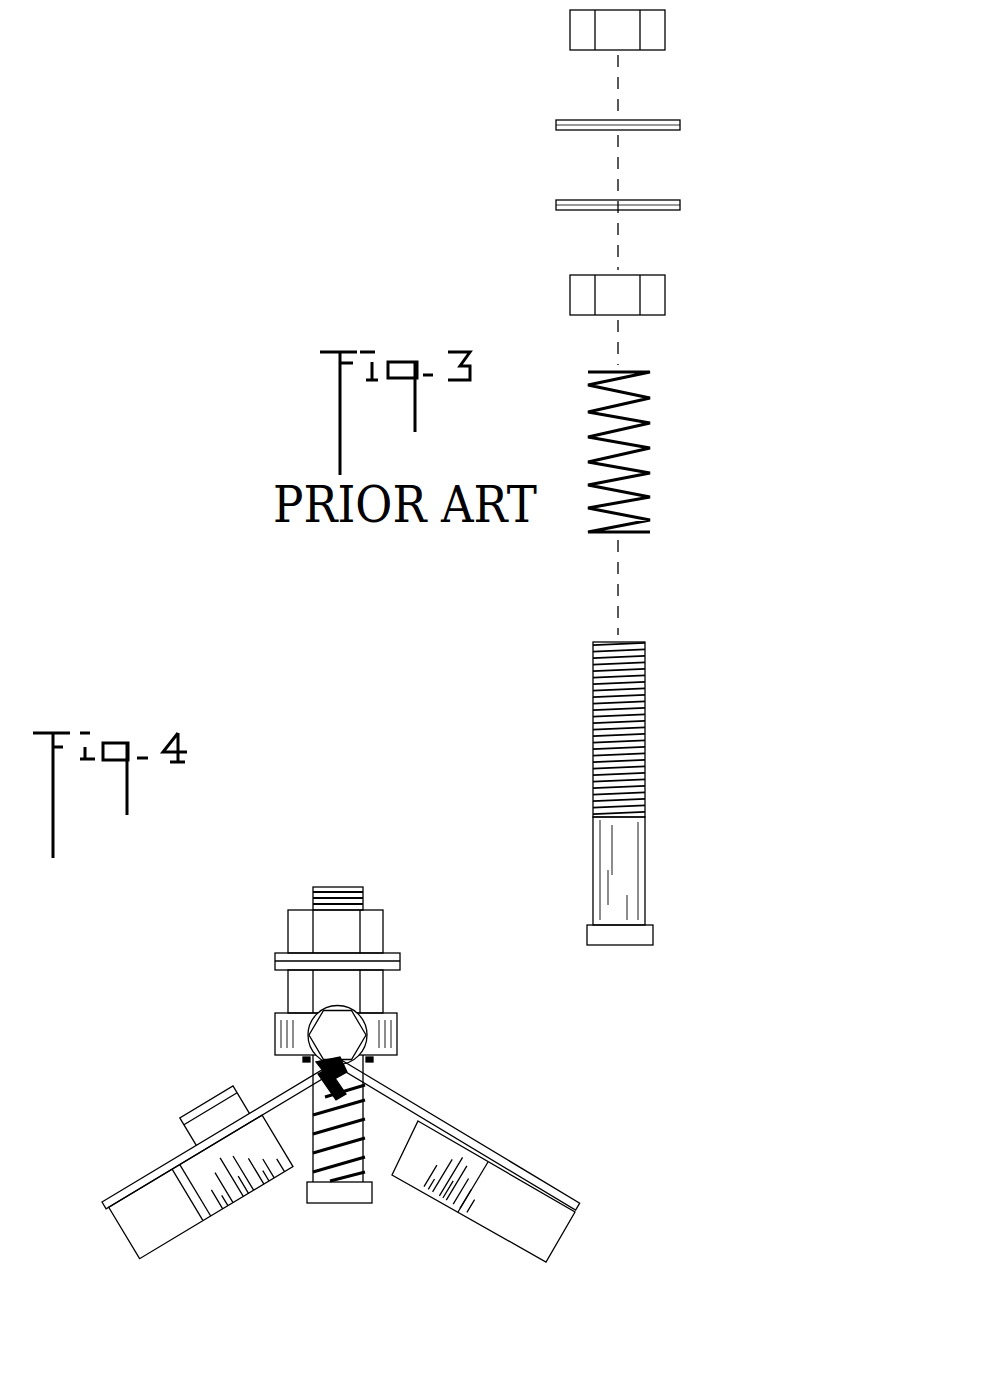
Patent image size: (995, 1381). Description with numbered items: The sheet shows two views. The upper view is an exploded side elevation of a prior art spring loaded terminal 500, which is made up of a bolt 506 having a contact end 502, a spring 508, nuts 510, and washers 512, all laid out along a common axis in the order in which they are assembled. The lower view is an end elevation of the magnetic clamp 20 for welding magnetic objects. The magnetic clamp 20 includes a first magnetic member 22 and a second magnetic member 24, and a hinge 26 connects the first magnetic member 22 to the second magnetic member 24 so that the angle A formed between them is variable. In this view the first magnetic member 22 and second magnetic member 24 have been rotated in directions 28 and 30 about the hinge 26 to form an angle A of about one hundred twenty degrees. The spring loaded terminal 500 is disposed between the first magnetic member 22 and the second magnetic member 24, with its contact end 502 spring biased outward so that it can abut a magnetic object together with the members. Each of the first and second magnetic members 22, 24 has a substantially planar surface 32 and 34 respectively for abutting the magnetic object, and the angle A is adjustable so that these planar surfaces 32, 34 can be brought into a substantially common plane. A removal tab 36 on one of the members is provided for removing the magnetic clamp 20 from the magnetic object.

In FIG. 3, the spring loaded terminal 500 is at (479, 219).
In FIG. 4, the spring loaded terminal 500 is at (258, 940).
In FIG. 3, the contact end 502 is at (640, 950).
In FIG. 4, the contact end 502 is at (313, 1205).
In FIG. 3, the bolt 506 is at (645, 755).
In FIG. 3, the spring 508 is at (652, 473).
In FIG. 3, the nuts 510 is at (665, 47).
In FIG. 3, the washers 512 is at (652, 130).
In FIG. 4, the magnetic clamp 20 is at (463, 960).
In FIG. 4, the first magnetic member 22 is at (124, 1221).
In FIG. 4, the second magnetic member 24 is at (537, 1235).
In FIG. 4, the hinge 26 is at (307, 1032).
In FIG. 4, the direction 28 is at (183, 1063).
In FIG. 4, the direction 30 is at (493, 1063).
In FIG. 4, the planar surface 32 is at (148, 1256).
In FIG. 4, the planar surface 34 is at (535, 1257).
In FIG. 4, the removal tab 36 is at (210, 1098).
In FIG. 4, the angle A is at (455, 1226).